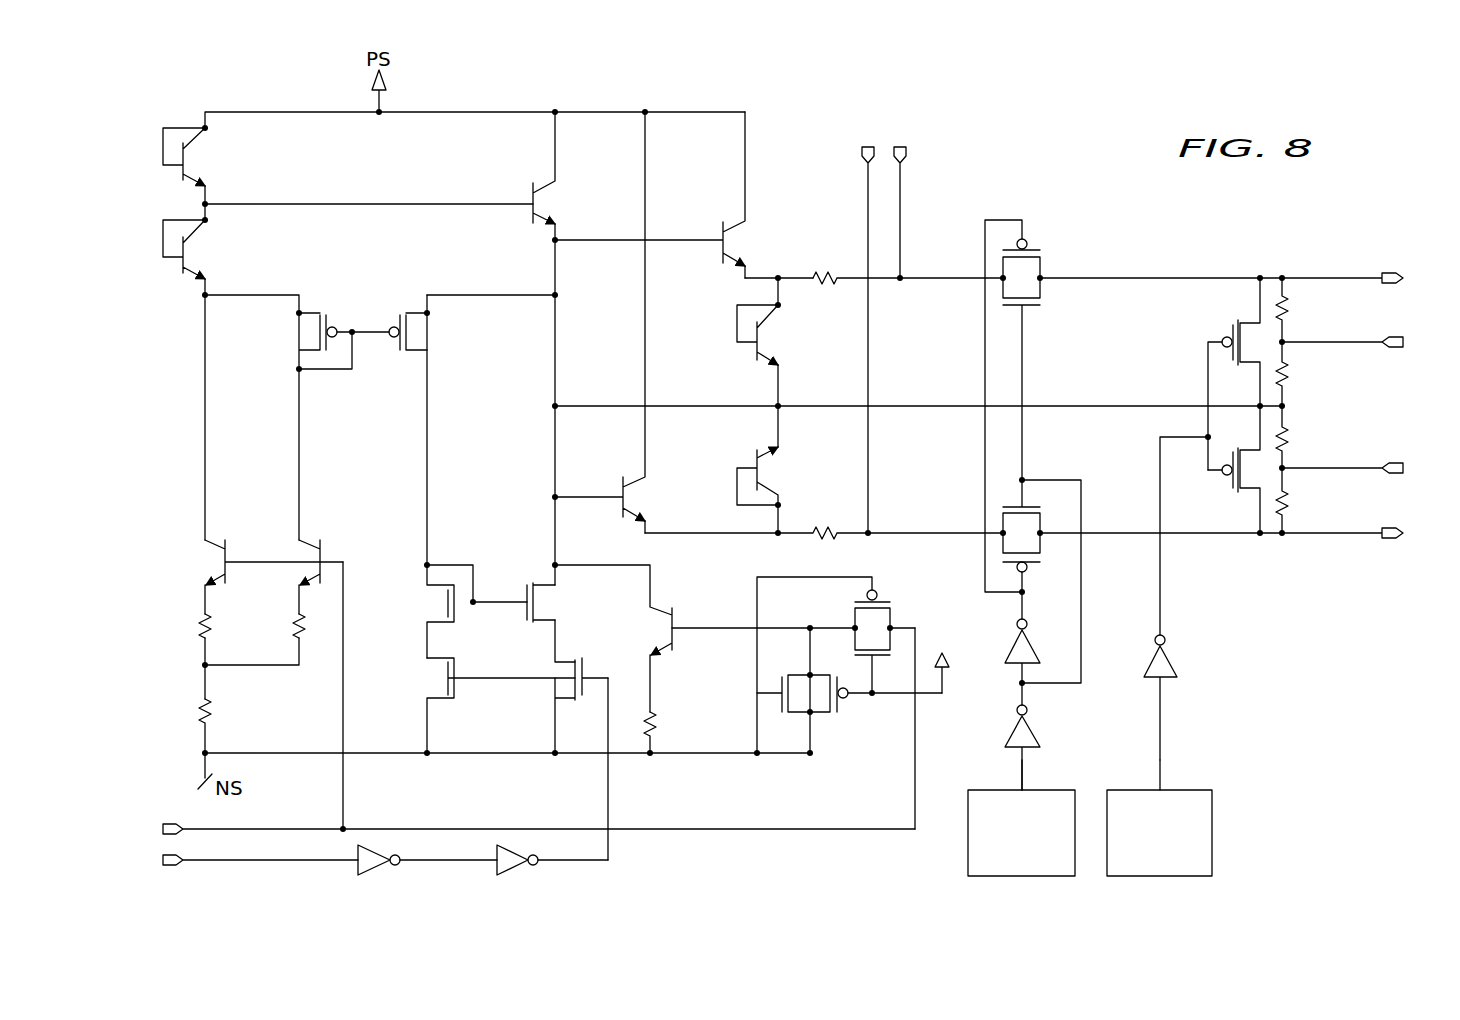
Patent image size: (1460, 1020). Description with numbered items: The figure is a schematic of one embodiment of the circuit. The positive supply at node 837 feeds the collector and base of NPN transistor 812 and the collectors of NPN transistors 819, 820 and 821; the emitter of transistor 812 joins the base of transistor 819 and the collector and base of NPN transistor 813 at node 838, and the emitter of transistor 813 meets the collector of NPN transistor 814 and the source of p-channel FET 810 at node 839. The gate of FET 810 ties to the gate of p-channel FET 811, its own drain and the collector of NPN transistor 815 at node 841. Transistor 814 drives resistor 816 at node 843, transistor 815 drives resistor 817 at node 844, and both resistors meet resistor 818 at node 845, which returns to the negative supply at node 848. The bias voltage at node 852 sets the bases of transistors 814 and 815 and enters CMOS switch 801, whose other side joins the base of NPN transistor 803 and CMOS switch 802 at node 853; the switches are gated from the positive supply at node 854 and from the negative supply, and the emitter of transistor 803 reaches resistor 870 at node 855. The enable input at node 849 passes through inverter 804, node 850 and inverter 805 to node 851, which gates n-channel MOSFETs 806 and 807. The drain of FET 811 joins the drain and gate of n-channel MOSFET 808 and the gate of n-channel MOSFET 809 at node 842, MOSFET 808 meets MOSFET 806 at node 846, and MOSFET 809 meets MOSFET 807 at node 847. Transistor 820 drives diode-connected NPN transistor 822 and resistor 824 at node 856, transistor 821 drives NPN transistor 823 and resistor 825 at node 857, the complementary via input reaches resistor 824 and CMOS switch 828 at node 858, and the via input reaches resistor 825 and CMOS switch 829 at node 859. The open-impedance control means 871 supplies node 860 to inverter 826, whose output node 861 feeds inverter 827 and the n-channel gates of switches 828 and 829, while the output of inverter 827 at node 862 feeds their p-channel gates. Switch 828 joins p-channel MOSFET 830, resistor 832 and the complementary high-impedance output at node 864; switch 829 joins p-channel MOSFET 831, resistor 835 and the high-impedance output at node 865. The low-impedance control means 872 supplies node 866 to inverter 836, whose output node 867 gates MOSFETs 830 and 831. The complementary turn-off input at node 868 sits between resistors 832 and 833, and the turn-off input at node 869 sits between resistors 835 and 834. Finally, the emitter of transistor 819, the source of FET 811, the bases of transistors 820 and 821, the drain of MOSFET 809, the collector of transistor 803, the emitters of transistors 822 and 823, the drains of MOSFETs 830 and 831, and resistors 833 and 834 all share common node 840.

The CMOS switch 801 is at (886, 598).
The CMOS switch 802 is at (843, 704).
The NPN transistor 803 is at (675, 649).
The inverter 804 is at (378, 868).
The inverter 805 is at (520, 868).
The n-channel MOSFET 806 is at (460, 694).
The n-channel MOSFET 807 is at (585, 675).
The n-channel MOSFET 808 is at (460, 619).
The n-channel MOSFET 809 is at (540, 580).
The p-channel FET 810 is at (335, 321).
The p-channel FET 811 is at (413, 354).
The NPN transistor 812 is at (180, 186).
The NPN transistor 813 is at (180, 279).
The NPN transistor 814 is at (234, 551).
The NPN transistor 815 is at (329, 551).
The resistor 816 is at (198, 625).
The resistor 817 is at (294, 625).
The resistor 818 is at (198, 710).
The NPN transistor 819 is at (529, 188).
The NPN transistor 820 is at (720, 231).
The NPN transistor 821 is at (623, 479).
The NPN transistor 822 is at (754, 361).
The NPN transistor 823 is at (754, 453).
The resistor 824 is at (826, 275).
The resistor 825 is at (826, 525).
The inverter 826 is at (1012, 730).
The inverter 827 is at (1012, 642).
The CMOS switch 828 is at (1031, 244).
The CMOS switch 829 is at (1029, 574).
The p-channel MOSFET 830 is at (1227, 336).
The p-channel MOSFET 831 is at (1227, 479).
The resistor 832 is at (1288, 306).
The resistor 833 is at (1288, 372).
The resistor 834 is at (1288, 432).
The resistor 835 is at (1288, 494).
The inverter 836 is at (1152, 658).
The node 837 is at (314, 110).
The node 838 is at (314, 201).
The node 839 is at (203, 435).
The node 840 is at (479, 293).
The node 841 is at (298, 435).
The node 842 is at (425, 435).
The node 843 is at (202, 600).
The node 844 is at (297, 600).
The node 845 is at (198, 652).
The node 846 is at (426, 647).
The node 847 is at (560, 645).
The node 848 is at (396, 756).
The node 849 is at (290, 865).
The node 850 is at (440, 865).
The node 851 is at (590, 865).
The node 852 is at (289, 824).
The node 853 is at (720, 626).
The node 854 is at (938, 696).
The node 855 is at (656, 683).
The node 856 is at (766, 275).
The node 857 is at (691, 538).
The node 858 is at (904, 201).
The node 859 is at (866, 201).
The node 860 is at (1024, 758).
The node 861 is at (1046, 477).
The node 862 is at (1000, 217).
The node 864 is at (1275, 275).
The node 865 is at (1275, 535).
The node 866 is at (1162, 727).
The node 867 is at (1162, 570).
The node 868 is at (1372, 345).
The node 869 is at (1372, 462).
The resistor 870 is at (656, 720).
The OPEN_Z control means 871 is at (1022, 878).
The LOW_Z control means 872 is at (1160, 878).